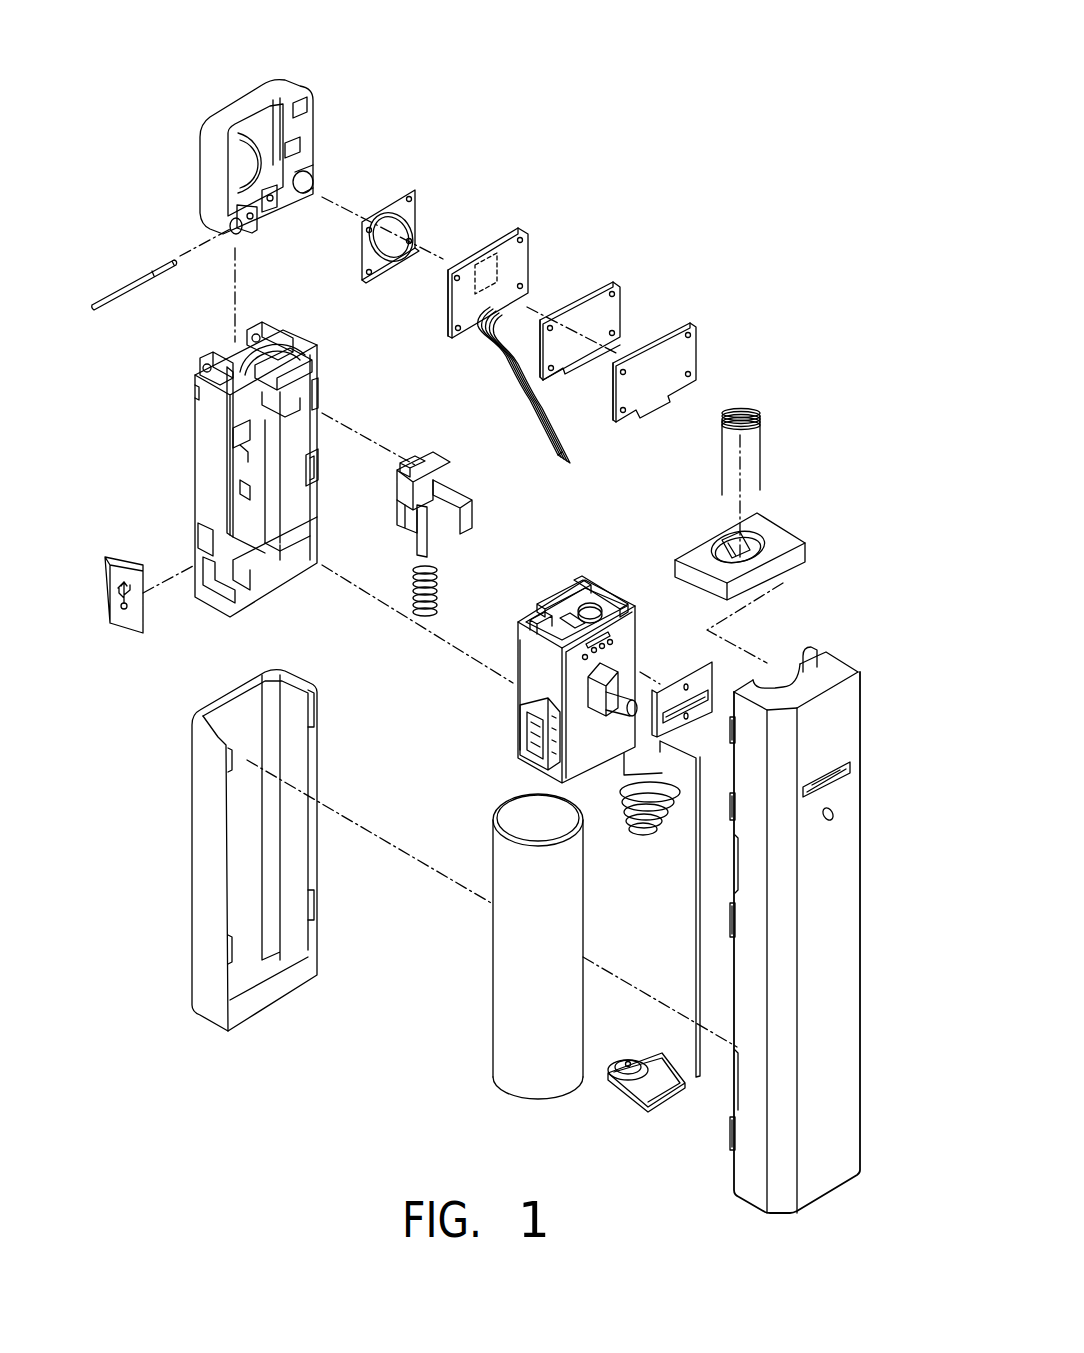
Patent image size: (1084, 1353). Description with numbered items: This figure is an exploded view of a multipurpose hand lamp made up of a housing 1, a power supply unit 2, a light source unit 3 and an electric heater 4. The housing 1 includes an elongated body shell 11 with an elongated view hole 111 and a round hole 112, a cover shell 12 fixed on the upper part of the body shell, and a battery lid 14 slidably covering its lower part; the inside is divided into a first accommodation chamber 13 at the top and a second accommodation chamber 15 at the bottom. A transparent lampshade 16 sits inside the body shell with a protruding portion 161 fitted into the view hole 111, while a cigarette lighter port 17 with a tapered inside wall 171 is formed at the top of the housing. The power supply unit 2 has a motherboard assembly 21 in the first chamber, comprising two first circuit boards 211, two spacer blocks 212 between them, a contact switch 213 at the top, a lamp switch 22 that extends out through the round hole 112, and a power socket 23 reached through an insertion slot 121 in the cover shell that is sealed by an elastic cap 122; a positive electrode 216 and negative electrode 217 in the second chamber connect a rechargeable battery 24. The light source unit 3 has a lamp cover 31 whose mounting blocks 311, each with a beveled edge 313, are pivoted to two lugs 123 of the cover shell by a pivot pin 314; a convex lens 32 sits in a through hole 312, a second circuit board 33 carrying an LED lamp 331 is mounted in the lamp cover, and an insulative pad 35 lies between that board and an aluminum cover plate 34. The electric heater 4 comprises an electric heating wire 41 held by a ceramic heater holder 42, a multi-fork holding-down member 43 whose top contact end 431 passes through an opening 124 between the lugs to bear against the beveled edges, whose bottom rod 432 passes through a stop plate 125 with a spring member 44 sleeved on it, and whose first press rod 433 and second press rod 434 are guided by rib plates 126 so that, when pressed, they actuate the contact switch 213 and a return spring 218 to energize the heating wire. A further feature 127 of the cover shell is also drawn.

The housing 1 is at (177, 422).
The elongated body shell 11 is at (847, 920).
The elongated view hole 111 is at (835, 784).
The round hole 112 is at (833, 820).
The cover shell 12 is at (193, 467).
The insertion slot 121 is at (213, 547).
The elastic cap 122 is at (136, 610).
The lugs 123 is at (200, 352).
The opening 124 is at (230, 352).
The stop plate 125 is at (232, 433).
The rib plates 126 is at (315, 393).
The groove 127 is at (196, 397).
The first accommodation chamber 13 is at (292, 497).
The battery lid 14 is at (190, 810).
The second accommodation chamber 15 is at (288, 850).
The transparent lampshade 16 is at (708, 694).
The protruding portion 161 is at (690, 708).
The cigarette lighter port 17 is at (800, 672).
The tapered inside wall 171 is at (808, 662).
The power supply unit 2 is at (488, 750).
The motherboard assembly 21 is at (560, 598).
The first circuit boards 211 is at (627, 648).
The spacer blocks 212 is at (537, 657).
The contact switch 213 is at (597, 605).
The positive electrode 216 is at (628, 1062).
The negative electrode 217 is at (632, 835).
The return spring 218 is at (537, 624).
The lamp switch 22 is at (622, 695).
The power socket 23 is at (523, 727).
The rechargeable battery 24 is at (512, 958).
The light source unit 3 is at (318, 82).
The lamp cover 31 is at (258, 107).
The mounting blocks 311 is at (273, 203).
The through hole 312 is at (237, 163).
The beveled edge 313 is at (297, 205).
The pivot pin 314 is at (150, 273).
The convex lens 32 is at (388, 205).
The second circuit board 33 is at (490, 252).
The LED lamp 331 is at (477, 283).
The cover plate 34 is at (680, 352).
The insulative pad 35 is at (580, 302).
The electric heater 4 is at (813, 452).
The electric heating wire 41 is at (725, 415).
The ceramic heater holder 42 is at (775, 532).
The holding-down member 43 is at (420, 460).
The top contact end 431 is at (412, 462).
The bottom rod 432 is at (427, 507).
The first press rod 433 is at (470, 517).
The second press rod 434 is at (413, 545).
The spring member 44 is at (415, 598).